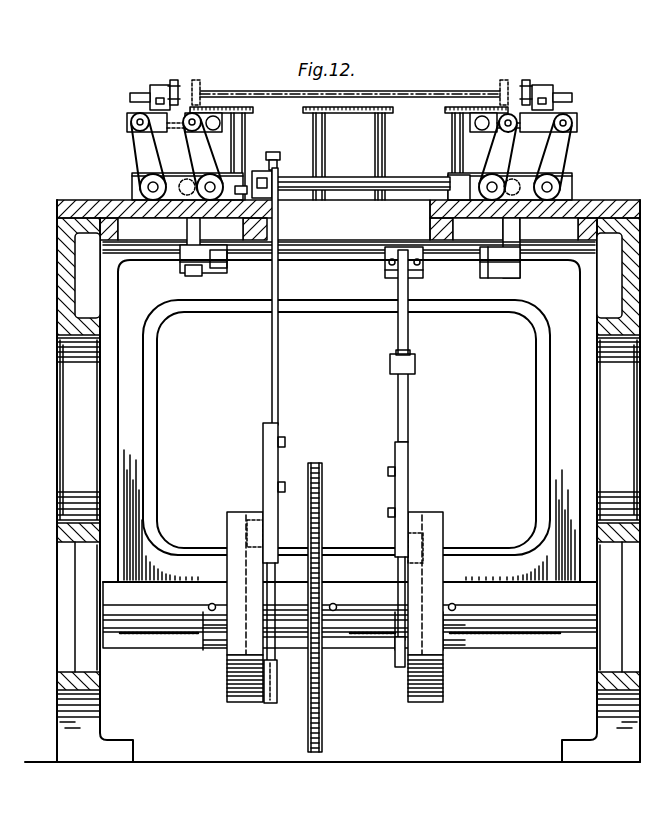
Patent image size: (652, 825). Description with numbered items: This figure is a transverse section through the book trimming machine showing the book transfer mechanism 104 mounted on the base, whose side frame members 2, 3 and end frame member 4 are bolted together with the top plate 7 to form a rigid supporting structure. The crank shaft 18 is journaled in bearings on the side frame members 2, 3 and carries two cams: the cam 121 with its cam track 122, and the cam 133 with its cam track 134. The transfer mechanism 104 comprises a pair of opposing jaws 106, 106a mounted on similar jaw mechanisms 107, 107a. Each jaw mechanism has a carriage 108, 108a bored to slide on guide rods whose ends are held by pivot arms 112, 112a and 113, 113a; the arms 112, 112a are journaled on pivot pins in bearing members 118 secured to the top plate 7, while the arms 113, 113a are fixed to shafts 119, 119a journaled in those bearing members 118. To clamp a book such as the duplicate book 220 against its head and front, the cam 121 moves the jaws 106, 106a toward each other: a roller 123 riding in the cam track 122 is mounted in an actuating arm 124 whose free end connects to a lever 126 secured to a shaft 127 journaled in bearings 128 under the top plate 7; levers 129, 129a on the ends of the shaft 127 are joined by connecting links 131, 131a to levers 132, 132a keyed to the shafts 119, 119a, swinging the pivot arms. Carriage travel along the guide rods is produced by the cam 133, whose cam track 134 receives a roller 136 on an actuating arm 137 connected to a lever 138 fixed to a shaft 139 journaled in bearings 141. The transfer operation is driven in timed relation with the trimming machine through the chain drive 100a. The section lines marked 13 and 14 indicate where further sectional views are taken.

The side frame member 2 is at (57, 535).
The side frame member 3 is at (620, 663).
The end frame member 4 is at (158, 402).
The top plate 7 is at (57, 209).
The section line 13 is at (153, 60).
The section line 14 is at (396, 230).
The crank shaft 18 is at (195, 628).
The chain drive 100a is at (308, 740).
The book transfer mechanism 104 is at (562, 83).
The jaw 106 is at (176, 80).
The jaw 106a is at (526, 80).
The jaw mechanism 107 is at (122, 118).
The jaw mechanism 107a is at (590, 121).
The carriage 108 is at (130, 129).
The carriage 108a is at (580, 113).
The pivot arm 112 is at (210, 152).
The pivot arm 112a is at (500, 150).
The pivot arm 113 is at (134, 147).
The pivot arm 113a is at (568, 148).
The bearing member 118 is at (140, 176).
The shaft 119 is at (140, 186).
The shaft 119a is at (562, 186).
The cam 121 is at (444, 527).
The cam track 122 is at (432, 690).
The roller 123 is at (421, 530).
The actuating arm 124 is at (409, 456).
The lever 126 is at (409, 337).
The shaft 127 is at (314, 264).
The bearing 128 is at (213, 271).
The lever 129 is at (193, 276).
The lever 129a is at (509, 276).
The connecting link 131 is at (186, 229).
The connecting link 131a is at (486, 248).
The lever 132 is at (180, 229).
The lever 132a is at (549, 229).
The cam 133 is at (227, 689).
The cam track 134 is at (260, 670).
The roller 136 is at (245, 524).
The actuating arm 137 is at (263, 452).
The lever 138 is at (274, 165).
The shaft 139 is at (336, 181).
The bearing 141 is at (250, 172).
The duplicate book 220 is at (263, 90).